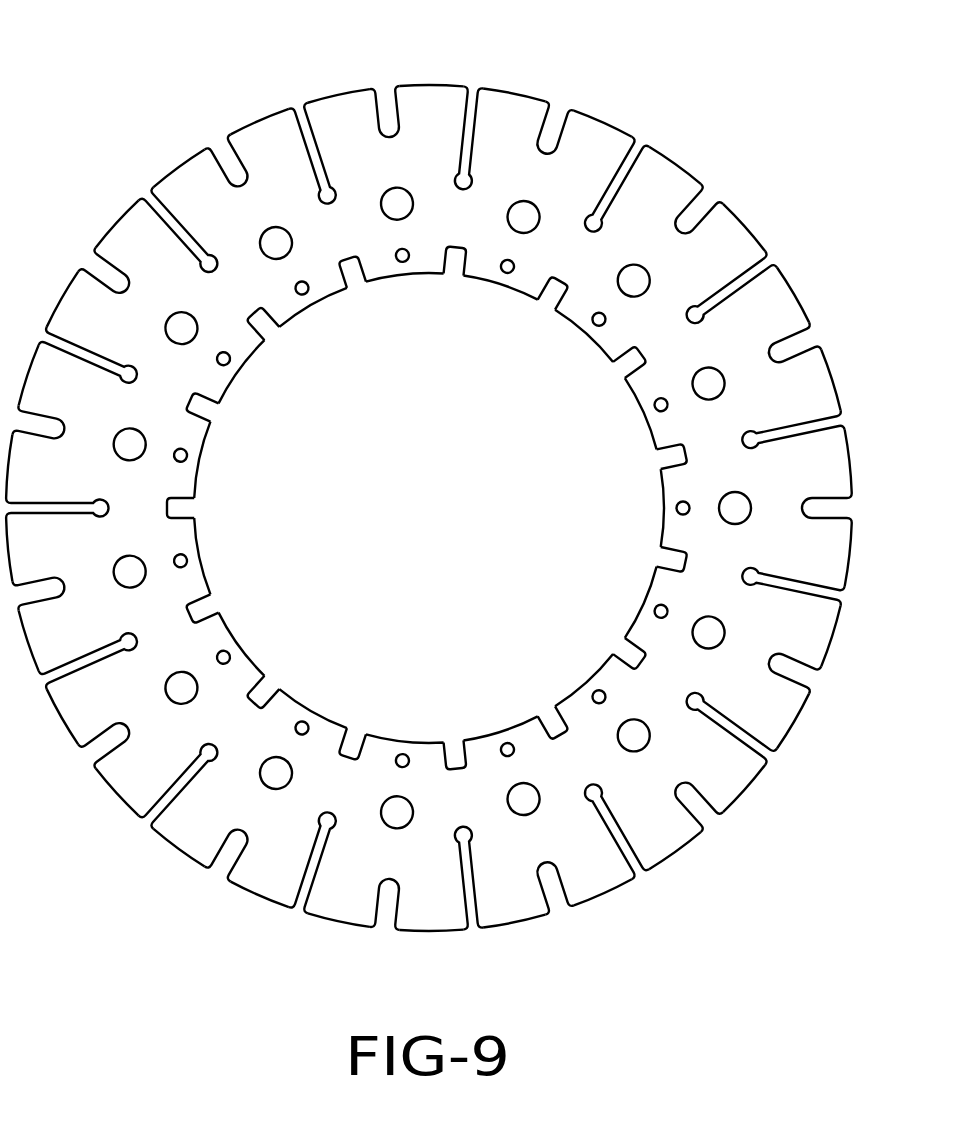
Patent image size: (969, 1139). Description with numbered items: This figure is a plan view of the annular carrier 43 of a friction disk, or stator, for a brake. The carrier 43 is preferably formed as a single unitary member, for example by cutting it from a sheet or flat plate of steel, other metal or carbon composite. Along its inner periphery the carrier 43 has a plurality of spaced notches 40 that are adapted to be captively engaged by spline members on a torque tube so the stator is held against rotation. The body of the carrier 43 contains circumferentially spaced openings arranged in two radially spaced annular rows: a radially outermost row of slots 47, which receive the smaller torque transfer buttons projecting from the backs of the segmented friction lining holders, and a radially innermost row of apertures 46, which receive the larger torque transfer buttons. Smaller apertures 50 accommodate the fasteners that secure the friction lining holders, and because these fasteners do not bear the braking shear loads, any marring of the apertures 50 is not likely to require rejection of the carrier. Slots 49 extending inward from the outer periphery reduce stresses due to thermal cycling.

The annular carrier 43 is at (190, 60).
The notches 40 is at (355, 280).
The apertures 46 is at (703, 627).
The slots 47 is at (803, 675).
The slots 49 is at (152, 810).
The apertures 50 is at (305, 727).